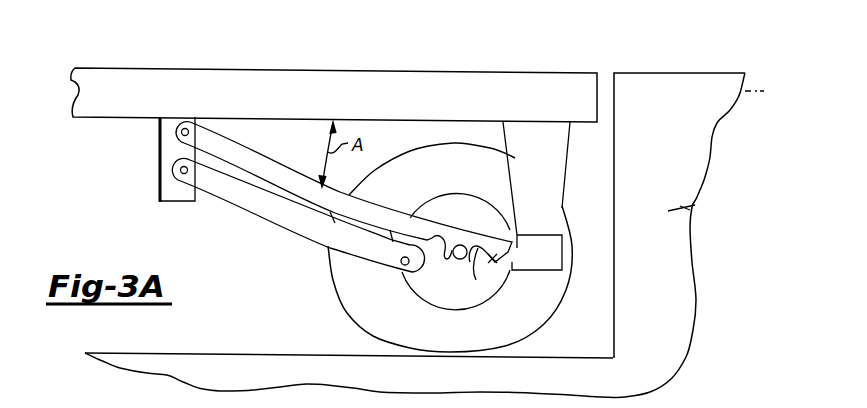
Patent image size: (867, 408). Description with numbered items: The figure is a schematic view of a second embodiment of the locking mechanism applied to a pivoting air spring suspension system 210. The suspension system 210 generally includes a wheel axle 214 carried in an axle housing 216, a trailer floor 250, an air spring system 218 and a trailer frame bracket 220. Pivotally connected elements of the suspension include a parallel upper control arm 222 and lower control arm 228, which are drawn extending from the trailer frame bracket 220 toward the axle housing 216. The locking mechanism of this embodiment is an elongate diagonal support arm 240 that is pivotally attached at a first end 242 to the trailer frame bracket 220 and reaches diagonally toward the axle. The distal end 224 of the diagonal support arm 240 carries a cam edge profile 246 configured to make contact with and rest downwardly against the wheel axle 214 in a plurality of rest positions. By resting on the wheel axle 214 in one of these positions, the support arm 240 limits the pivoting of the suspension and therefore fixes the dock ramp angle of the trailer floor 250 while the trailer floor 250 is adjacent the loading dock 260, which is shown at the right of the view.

The pivoting air spring suspension system 210 is at (311, 307).
The wheel axle 214 is at (448, 262).
The axle housing 216 is at (464, 298).
The air spring system 218 is at (522, 137).
The trailer frame bracket 220 is at (178, 187).
The upper control arm 222 is at (258, 160).
The distal end 224 is at (548, 270).
The lower control arm 228 is at (270, 207).
The elongate diagonal support arm 240 is at (214, 146).
The first end 242 is at (173, 128).
The cam edge profile 246 is at (476, 262).
The trailer floor 250 is at (318, 82).
The loading dock 260 is at (675, 144).